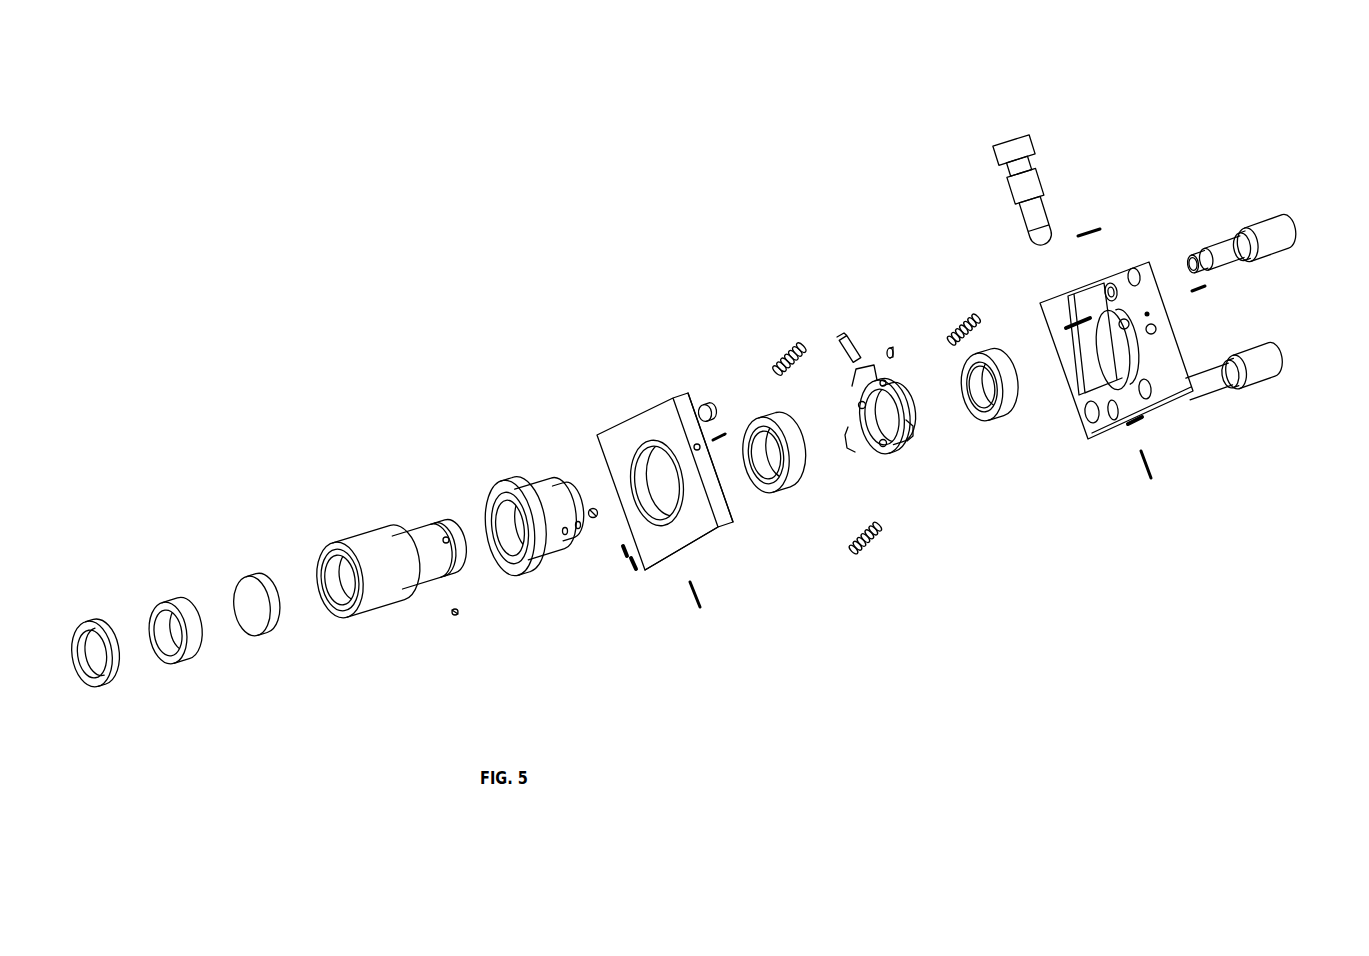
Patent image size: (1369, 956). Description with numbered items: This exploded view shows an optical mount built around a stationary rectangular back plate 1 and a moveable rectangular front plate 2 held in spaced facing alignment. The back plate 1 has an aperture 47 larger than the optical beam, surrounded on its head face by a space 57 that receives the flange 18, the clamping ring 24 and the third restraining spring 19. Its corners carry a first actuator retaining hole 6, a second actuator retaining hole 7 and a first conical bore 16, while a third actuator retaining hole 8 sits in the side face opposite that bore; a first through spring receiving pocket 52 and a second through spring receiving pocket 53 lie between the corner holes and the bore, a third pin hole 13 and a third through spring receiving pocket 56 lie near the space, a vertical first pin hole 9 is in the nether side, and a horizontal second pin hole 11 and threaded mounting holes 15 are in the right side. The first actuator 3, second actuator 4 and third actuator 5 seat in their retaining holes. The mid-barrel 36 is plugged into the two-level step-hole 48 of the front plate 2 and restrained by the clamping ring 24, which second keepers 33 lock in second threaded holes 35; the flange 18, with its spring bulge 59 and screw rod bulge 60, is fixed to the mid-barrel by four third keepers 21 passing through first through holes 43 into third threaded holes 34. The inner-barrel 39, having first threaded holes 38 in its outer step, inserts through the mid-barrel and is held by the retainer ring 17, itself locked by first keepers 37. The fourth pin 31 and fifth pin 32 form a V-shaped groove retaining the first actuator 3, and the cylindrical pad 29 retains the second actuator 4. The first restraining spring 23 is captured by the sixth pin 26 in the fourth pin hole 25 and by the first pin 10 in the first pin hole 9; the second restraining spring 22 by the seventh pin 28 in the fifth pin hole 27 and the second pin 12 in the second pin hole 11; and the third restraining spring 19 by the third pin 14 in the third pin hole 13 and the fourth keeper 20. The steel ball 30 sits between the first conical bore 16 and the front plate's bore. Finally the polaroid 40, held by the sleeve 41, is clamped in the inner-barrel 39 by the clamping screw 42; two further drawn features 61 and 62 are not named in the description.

The rectangular back plate 1 is at (1171, 391).
The rectangular front plate 2 is at (655, 548).
The first actuator 3 is at (1256, 366).
The second actuator 4 is at (1277, 246).
The third actuator 5 is at (1032, 195).
The first actuator retaining hole 6 is at (1092, 414).
The second actuator retaining hole 7 is at (1112, 290).
The third actuator retaining hole 8 is at (1092, 320).
The first pin hole 9 is at (1134, 427).
The first pin 10 is at (1151, 479).
The second pin hole 11 is at (1147, 314).
The second pin 12 is at (1207, 290).
The third pin hole 13 is at (1100, 290).
The third pin 14 is at (1092, 232).
The threaded mounting holes 15 is at (1156, 331).
The first conical bore 16 is at (1149, 394).
The retainer ring 17 is at (1005, 397).
The flange 18 is at (907, 434).
The third restraining spring 19 is at (962, 317).
The fourth keeper 20 is at (849, 337).
The third keepers 21 is at (892, 350).
The second restraining spring 22 is at (790, 346).
The first restraining spring 23 is at (880, 537).
The clamping ring 24 is at (793, 467).
The fourth pin hole 25 is at (687, 555).
The sixth pin 26 is at (700, 607).
The fifth pin hole 27 is at (694, 446).
The seventh pin 28 is at (718, 437).
The cylindrical pad 29 is at (707, 405).
The steel ball 30 is at (735, 510).
The fourth pin 31 is at (633, 567).
The fifth pin 32 is at (625, 553).
The second keepers 33 is at (593, 508).
The third threaded holes 34 is at (560, 485).
The second threaded holes 35 is at (568, 536).
The mid-barrel 36 is at (537, 563).
The first keepers 37 is at (455, 618).
The first threaded holes 38 is at (448, 572).
The inner-barrel 39 is at (375, 567).
The polaroid 40 is at (270, 597).
The sleeve 41 is at (192, 635).
The clamping screw 42 is at (102, 637).
The first through holes 43 is at (907, 410).
The aperture 47 is at (1104, 335).
The 2-level step-hole 48 is at (667, 480).
The first through spring receiving pocket 52 is at (1113, 412).
The second through spring receiving pocket 53 is at (1127, 322).
The third through spring receiving pocket 56 is at (1134, 279).
The space 57 is at (1081, 356).
The spring bulge 59 is at (863, 383).
The screw rod bulge 60 is at (857, 437).
The bore 61 is at (525, 525).
The bore 62 is at (342, 608).